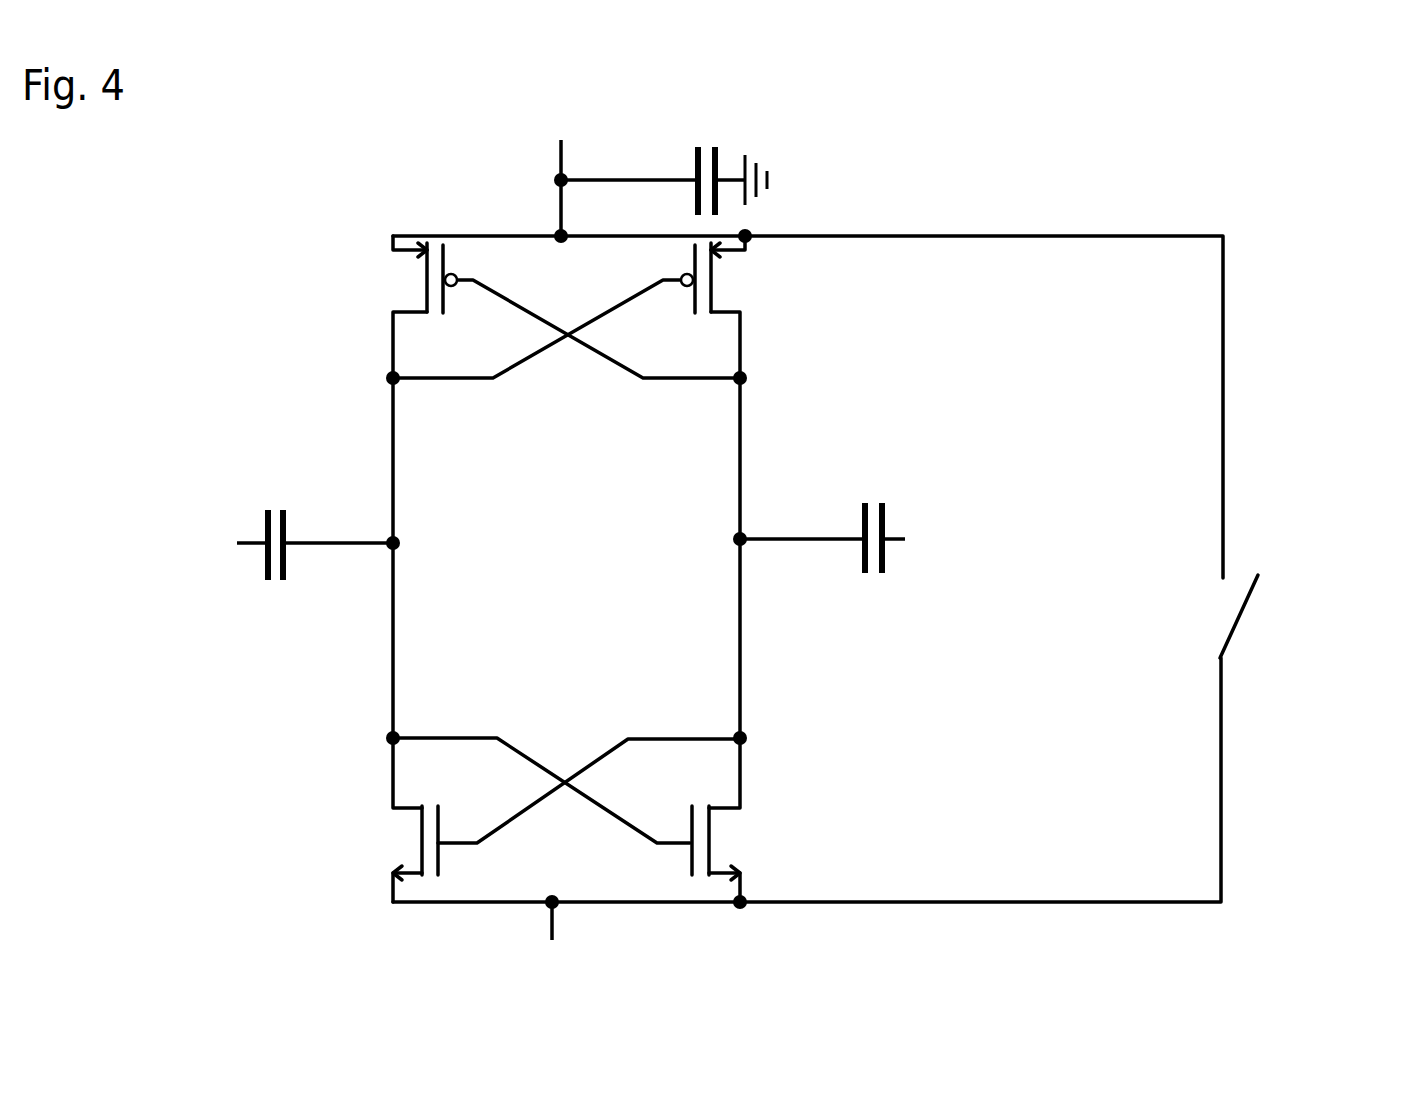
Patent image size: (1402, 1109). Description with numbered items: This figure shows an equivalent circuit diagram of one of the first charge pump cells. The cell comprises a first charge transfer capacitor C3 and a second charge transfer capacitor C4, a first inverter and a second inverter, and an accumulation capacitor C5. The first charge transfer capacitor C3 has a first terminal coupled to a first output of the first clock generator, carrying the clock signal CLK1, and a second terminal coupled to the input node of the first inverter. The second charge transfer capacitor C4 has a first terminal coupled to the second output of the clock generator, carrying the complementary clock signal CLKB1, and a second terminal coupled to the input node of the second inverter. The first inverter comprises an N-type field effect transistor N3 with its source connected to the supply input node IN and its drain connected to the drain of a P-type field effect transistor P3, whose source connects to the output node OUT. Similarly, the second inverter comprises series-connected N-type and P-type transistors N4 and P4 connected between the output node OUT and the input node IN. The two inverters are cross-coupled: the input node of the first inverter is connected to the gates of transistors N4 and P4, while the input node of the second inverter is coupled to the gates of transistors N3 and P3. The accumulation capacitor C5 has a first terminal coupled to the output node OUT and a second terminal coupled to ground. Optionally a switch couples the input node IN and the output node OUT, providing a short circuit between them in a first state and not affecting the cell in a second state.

The output node OUT is at (555, 135).
The accumulation capacitor C5 is at (698, 140).
The P-type field effect transistor P3 is at (400, 275).
The P-type transistor P4 is at (727, 292).
The first charge transfer capacitor C3 is at (277, 510).
The first clock signal CLK1 is at (243, 553).
The second charge transfer capacitor C4 is at (870, 500).
The second clock signal CLKB1 is at (905, 553).
The N-type field effect transistor N3 is at (380, 835).
The N-type transistor N4 is at (737, 845).
The supply input node IN is at (540, 935).